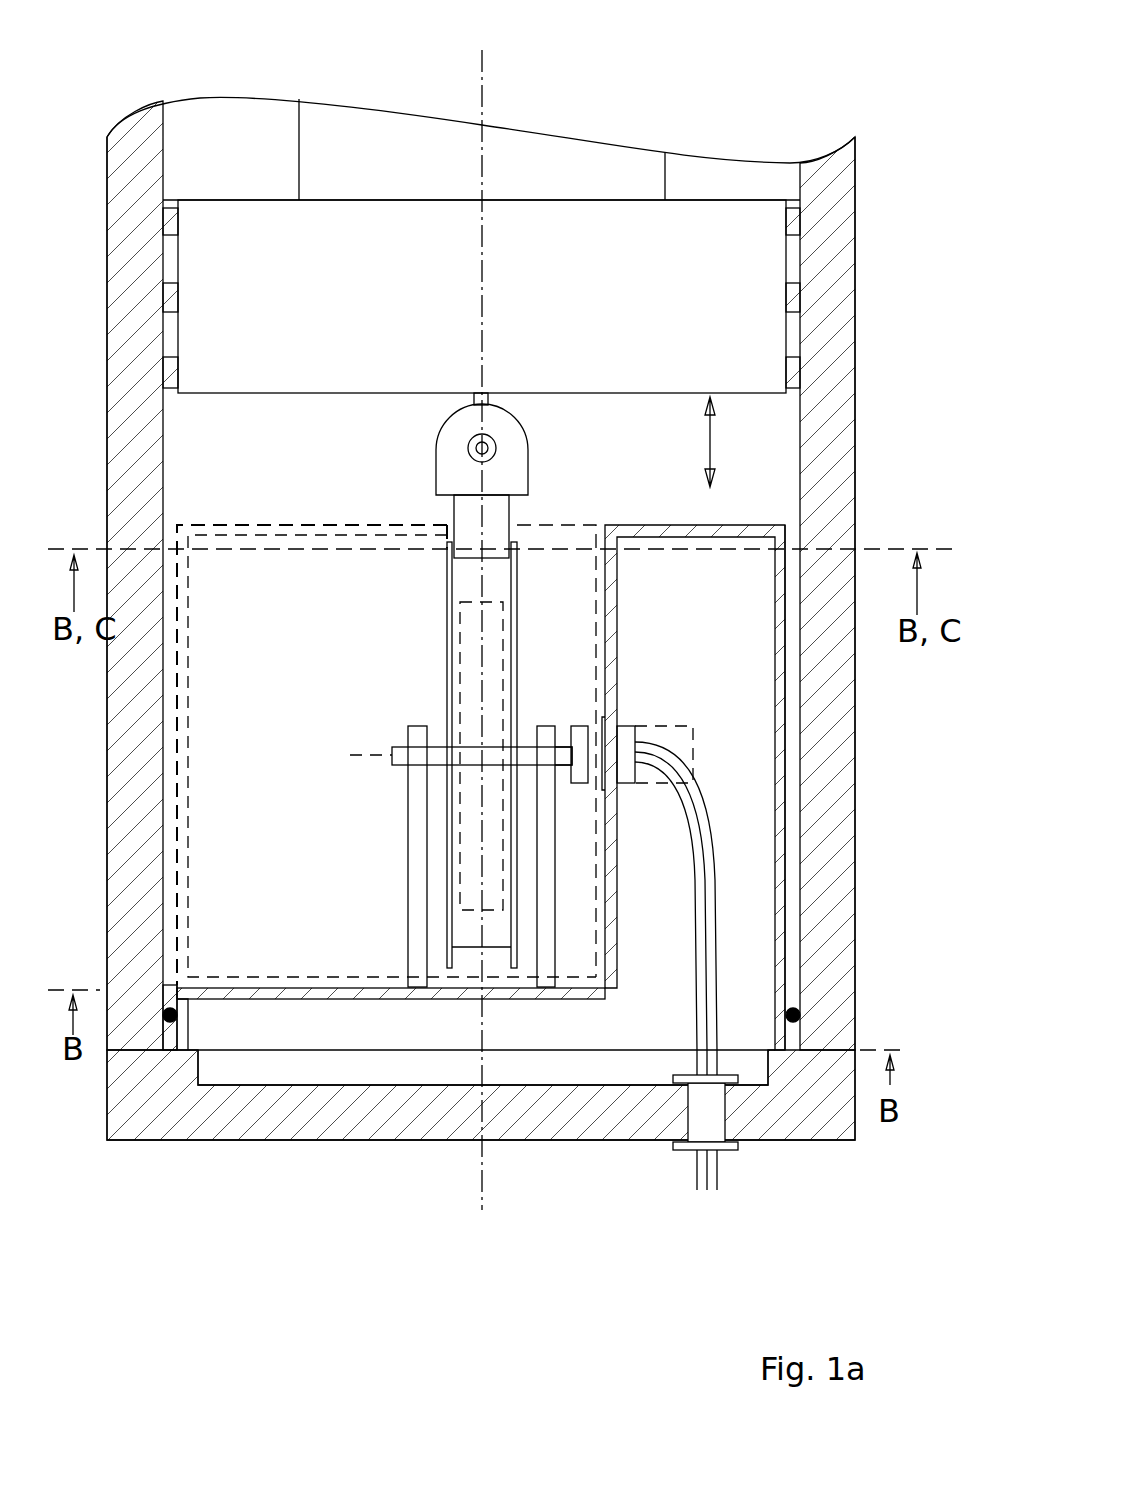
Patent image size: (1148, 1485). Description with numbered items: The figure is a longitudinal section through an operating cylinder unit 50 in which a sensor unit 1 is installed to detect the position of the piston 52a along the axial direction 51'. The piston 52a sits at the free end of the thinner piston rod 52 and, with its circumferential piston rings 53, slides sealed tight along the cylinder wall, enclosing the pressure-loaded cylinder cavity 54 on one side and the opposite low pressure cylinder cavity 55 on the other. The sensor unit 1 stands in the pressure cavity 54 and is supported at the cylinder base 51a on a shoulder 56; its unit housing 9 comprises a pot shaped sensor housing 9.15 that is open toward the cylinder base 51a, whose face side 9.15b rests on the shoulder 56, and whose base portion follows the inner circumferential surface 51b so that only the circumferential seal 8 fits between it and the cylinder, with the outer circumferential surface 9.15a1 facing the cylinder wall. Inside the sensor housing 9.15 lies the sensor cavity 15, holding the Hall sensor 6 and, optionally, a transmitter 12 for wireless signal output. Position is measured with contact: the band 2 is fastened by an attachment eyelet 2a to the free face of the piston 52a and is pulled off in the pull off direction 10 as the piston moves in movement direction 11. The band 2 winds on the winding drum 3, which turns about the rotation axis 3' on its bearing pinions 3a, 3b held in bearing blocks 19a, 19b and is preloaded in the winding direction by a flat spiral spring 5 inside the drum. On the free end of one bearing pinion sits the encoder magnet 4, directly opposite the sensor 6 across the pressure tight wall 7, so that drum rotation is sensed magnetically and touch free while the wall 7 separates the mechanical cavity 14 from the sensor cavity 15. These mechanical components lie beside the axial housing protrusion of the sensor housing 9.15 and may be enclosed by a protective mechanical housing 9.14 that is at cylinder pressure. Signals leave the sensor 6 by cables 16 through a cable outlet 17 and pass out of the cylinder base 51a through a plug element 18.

The operating cylinder unit 50 is at (857, 78).
The cylinder base 51a is at (348, 1140).
The inner circumferential surface 51b is at (800, 810).
The axial direction 51' is at (530, 630).
The piston rod 52 is at (299, 163).
The piston 52a is at (482, 296).
The piston ring 53 is at (790, 371).
The cylinder cavity 54 is at (743, 442).
The cylinder cavity 55 is at (228, 152).
The sensor unit 1 is at (256, 486).
The tension element band 2 is at (473, 478).
The attachment eyelet 2a is at (494, 448).
The winding drum 3 is at (451, 755).
The rotation axis 3' is at (368, 724).
The bearing pinion 3a is at (392, 765).
The bearing pinion 3b is at (567, 745).
The encoder magnet 4 is at (582, 775).
The flat spiral spring 5 is at (460, 647).
The sensor 6 is at (625, 733).
The wall 7 is at (608, 732).
The seal 8 is at (800, 1015).
The unit housing 9 is at (619, 516).
The mechanical housing 9.14 is at (177, 748).
The sensor housing 9.15 is at (780, 642).
The outer circumferential surface 9.15a1 is at (787, 942).
The face side 9.15b is at (175, 1048).
The pull off direction 10 is at (480, 517).
The movement direction 11 is at (481, 526).
The transmitter 12 is at (680, 752).
The mechanical cavity 14 is at (392, 756).
The sensor cavity 15 is at (481, 787).
The cable 16 is at (720, 940).
The cable outlet 17 is at (668, 1048).
The plug element 18 is at (708, 1112).
The bearing block 19a is at (412, 877).
The bearing block 19b is at (547, 870).
The shoulder 56 is at (193, 1052).